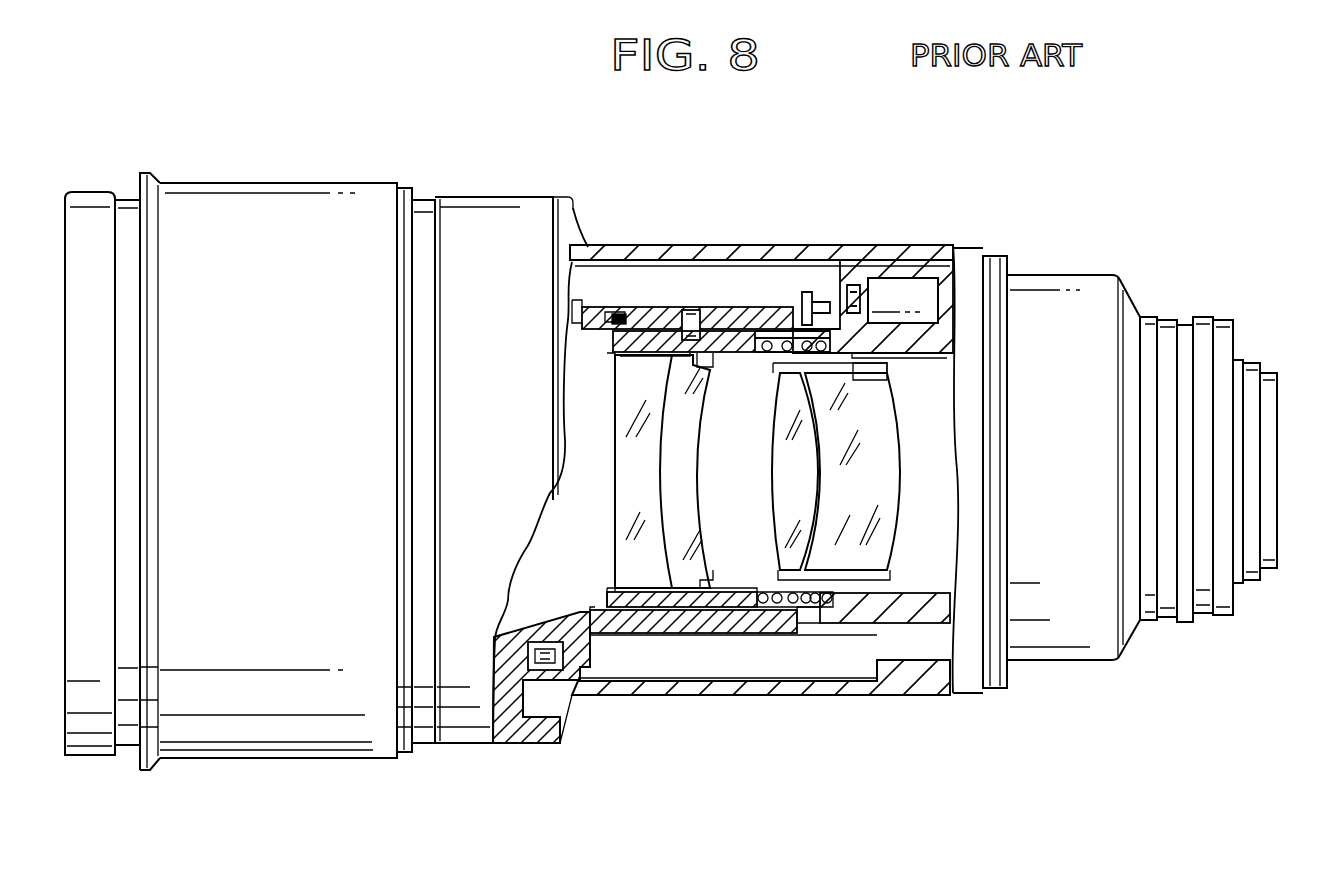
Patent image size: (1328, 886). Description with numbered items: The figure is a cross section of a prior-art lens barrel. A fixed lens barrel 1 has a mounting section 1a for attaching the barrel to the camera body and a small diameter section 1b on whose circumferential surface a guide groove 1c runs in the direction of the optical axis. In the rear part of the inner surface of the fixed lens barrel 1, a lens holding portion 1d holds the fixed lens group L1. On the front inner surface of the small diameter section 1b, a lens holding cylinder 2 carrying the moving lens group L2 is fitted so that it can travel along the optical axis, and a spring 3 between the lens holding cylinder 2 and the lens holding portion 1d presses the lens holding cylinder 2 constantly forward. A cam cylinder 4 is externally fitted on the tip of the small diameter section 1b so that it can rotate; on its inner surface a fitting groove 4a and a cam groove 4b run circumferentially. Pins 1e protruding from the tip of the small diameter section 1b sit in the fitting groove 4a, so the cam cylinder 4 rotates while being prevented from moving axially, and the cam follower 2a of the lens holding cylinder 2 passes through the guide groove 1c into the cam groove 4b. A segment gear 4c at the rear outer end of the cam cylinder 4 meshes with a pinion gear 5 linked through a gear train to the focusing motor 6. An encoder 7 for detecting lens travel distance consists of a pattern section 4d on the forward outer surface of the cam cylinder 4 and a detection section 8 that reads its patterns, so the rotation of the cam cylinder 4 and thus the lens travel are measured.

The fixed lens barrel 1 is at (493, 207).
The mounting section 1a is at (1245, 357).
The small diameter section 1b is at (770, 630).
The guide groove 1c is at (723, 640).
The lens holding portion 1d is at (847, 613).
The pins 1e is at (613, 640).
The lens holding cylinder 2 is at (775, 320).
The cam follower 2a is at (682, 630).
The spring 3 is at (790, 320).
The cam cylinder 4 is at (648, 320).
The fitting groove 4a is at (623, 317).
The cam groove 4b is at (690, 320).
The segment gear 4c is at (800, 627).
The pattern section 4d is at (537, 683).
The pinion gear 5 is at (825, 300).
The focusing motor 6 is at (918, 297).
The encoder 7 is at (363, 815).
The detection section 8 is at (493, 715).
The fixed lens group L1 is at (780, 433).
The moving lens group L2 is at (698, 542).